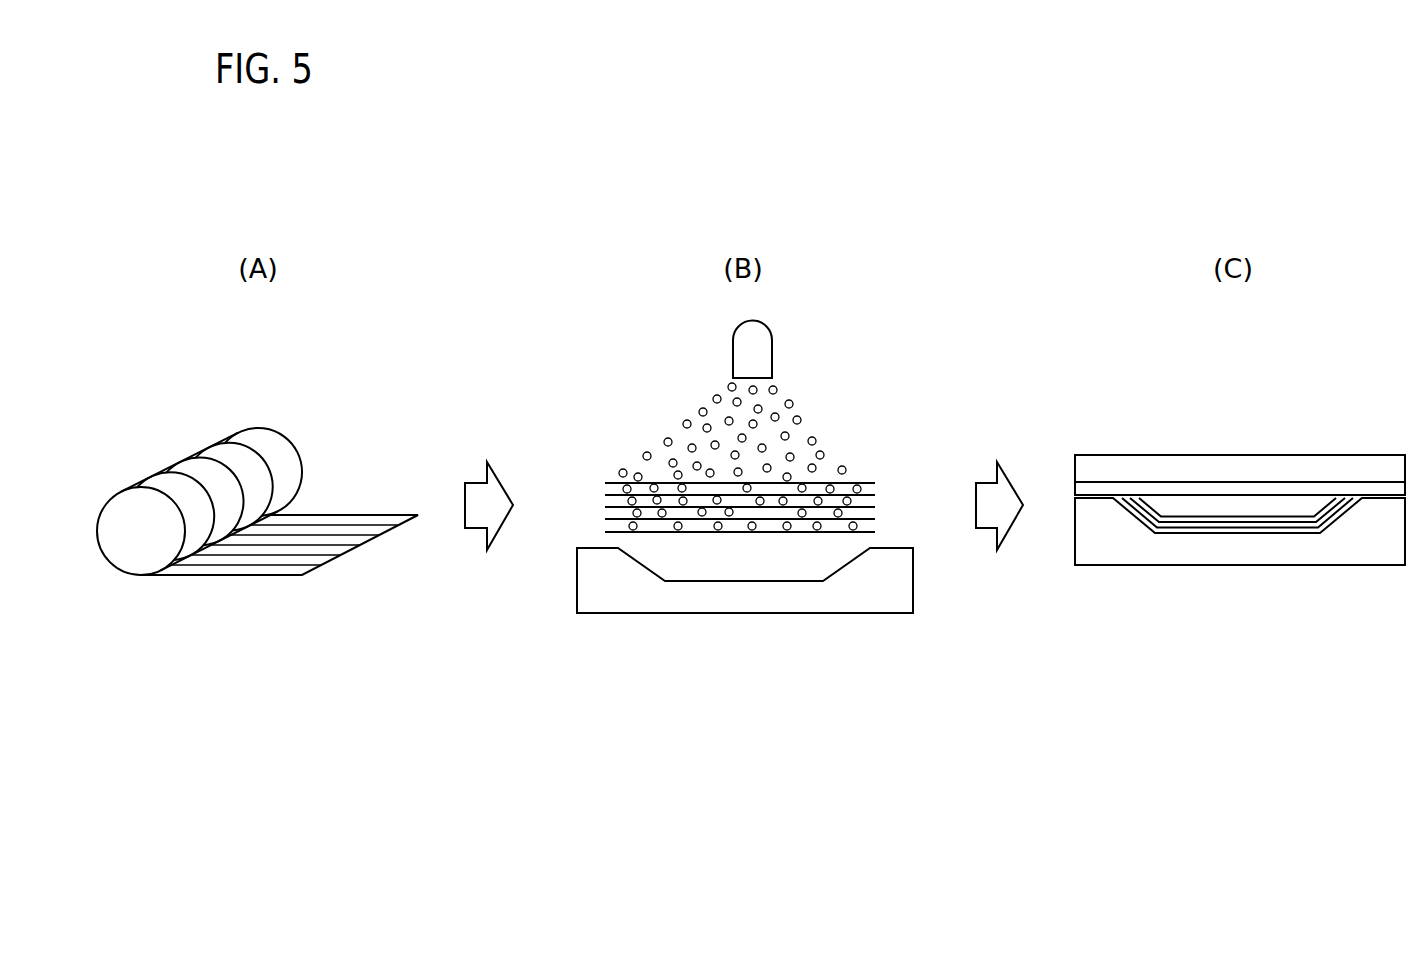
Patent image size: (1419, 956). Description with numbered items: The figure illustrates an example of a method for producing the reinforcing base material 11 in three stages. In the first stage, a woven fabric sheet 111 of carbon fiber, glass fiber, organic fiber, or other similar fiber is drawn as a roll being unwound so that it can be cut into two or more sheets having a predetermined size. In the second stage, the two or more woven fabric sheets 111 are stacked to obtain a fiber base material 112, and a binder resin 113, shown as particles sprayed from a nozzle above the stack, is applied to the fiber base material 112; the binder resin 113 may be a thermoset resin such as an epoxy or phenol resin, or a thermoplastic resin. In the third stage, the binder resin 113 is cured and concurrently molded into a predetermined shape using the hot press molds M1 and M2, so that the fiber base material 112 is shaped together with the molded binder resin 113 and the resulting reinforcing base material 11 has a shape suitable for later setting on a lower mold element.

The woven fabric sheet 111 is at (263, 570).
The fiber base material 112 is at (663, 525).
The binder resin 113 is at (788, 433).
The reinforcing base material 11 is at (1187, 525).
The hot press mold M1 is at (1300, 472).
The hot press mold M2 is at (1223, 542).